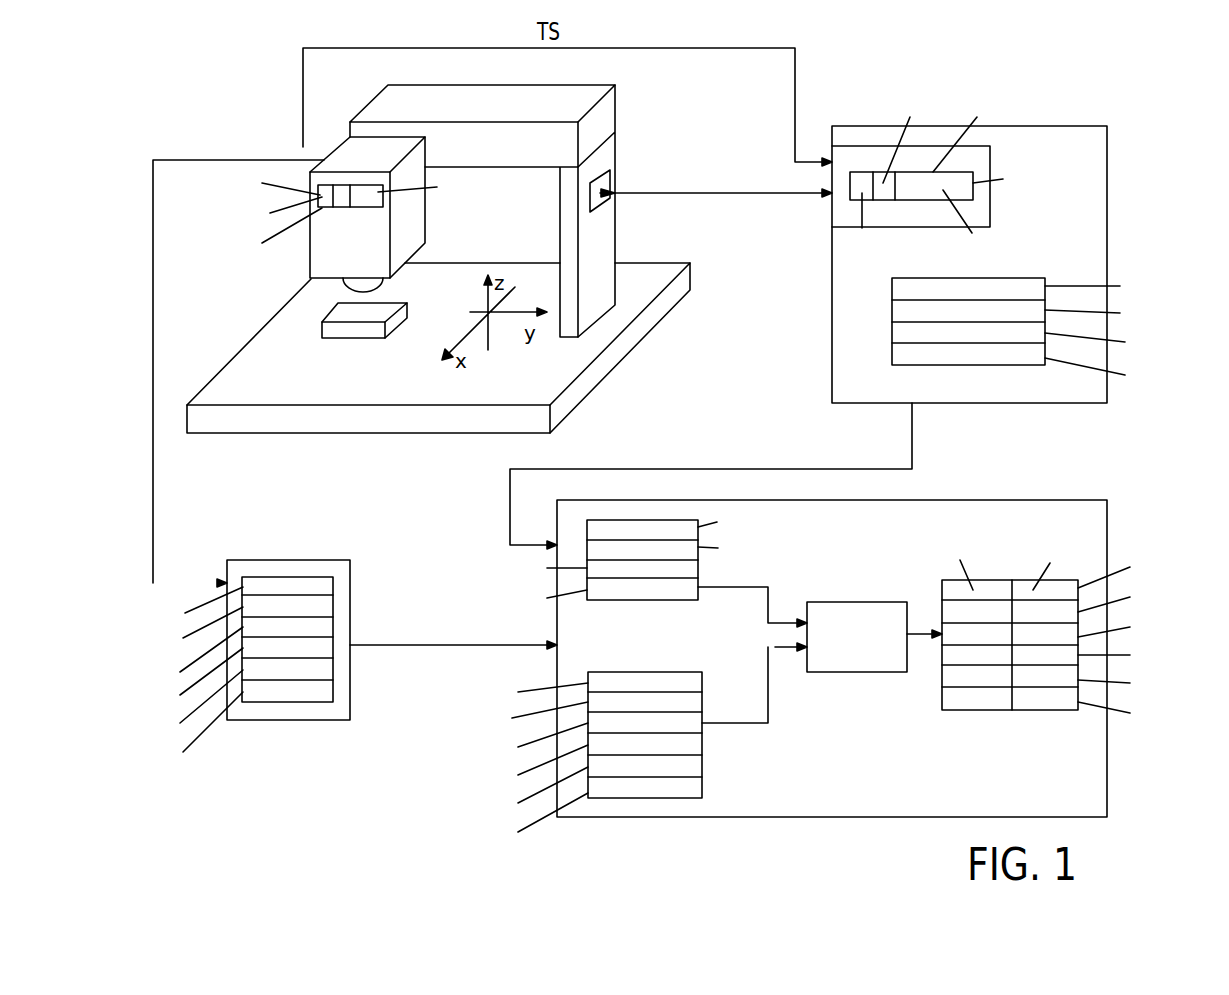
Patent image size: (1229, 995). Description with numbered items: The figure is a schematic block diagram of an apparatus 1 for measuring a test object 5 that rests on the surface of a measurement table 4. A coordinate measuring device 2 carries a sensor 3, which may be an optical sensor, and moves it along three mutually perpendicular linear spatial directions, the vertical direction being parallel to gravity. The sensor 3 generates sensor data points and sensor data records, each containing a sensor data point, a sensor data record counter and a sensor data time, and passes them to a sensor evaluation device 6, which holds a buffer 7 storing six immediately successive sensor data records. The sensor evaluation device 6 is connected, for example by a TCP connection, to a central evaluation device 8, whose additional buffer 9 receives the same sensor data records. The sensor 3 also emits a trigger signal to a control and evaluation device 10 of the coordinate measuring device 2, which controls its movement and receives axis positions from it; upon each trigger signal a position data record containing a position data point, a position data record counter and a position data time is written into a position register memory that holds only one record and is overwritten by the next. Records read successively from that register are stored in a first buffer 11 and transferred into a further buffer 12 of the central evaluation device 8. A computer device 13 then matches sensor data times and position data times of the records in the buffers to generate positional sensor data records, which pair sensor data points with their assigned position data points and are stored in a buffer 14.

The apparatus 1 is at (305, 789).
The coordinate measuring device 2 is at (600, 230).
The sensor 3 is at (408, 222).
The measurement table 4 is at (553, 360).
The test object 5 is at (375, 307).
The sensor evaluation device 6 is at (313, 560).
The buffer for sensor data records 7 is at (262, 575).
The central evaluation device 8 is at (717, 817).
The buffer for sensor data records 9 is at (625, 802).
The control and evaluation device of the coordinate measuring device 10 is at (845, 126).
The buffer for position data records 11 is at (892, 332).
The buffer for position data records 12 is at (607, 520).
The computer device 13 is at (857, 674).
The buffer for positional sensor data records 14 is at (955, 712).